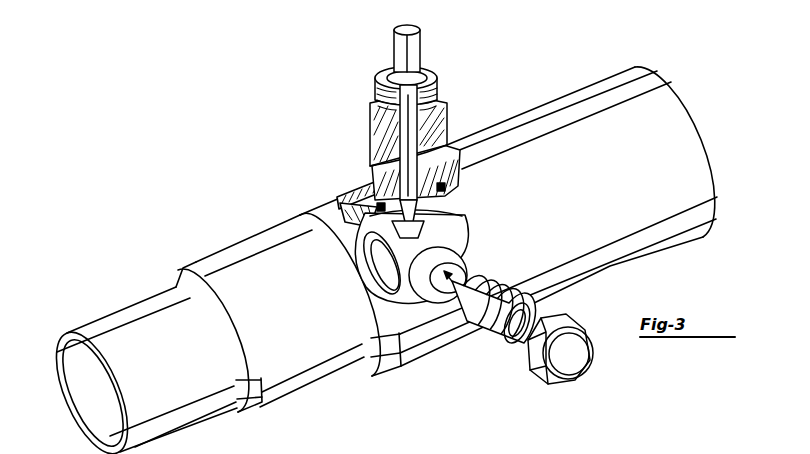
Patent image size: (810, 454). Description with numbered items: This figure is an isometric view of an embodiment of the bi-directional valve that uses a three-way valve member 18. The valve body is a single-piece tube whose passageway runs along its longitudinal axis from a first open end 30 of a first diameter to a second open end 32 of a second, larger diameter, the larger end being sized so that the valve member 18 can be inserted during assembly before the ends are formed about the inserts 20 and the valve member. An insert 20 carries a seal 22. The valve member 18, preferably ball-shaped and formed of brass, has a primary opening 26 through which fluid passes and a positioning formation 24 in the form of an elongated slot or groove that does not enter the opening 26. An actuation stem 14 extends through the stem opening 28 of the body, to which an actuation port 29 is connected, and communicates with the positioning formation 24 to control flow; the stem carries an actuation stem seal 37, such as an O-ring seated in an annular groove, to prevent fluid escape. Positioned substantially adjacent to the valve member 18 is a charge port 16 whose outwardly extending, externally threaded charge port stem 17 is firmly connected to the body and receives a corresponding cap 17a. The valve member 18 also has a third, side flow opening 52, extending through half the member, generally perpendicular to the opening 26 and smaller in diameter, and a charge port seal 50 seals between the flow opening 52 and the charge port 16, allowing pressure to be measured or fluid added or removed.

The actuation stem 14 is at (417, 26).
The charge port 16 is at (522, 360).
The charge port stem 17 is at (493, 335).
The cap 17a is at (573, 326).
The valve member 18 is at (370, 232).
The insert 20 is at (457, 182).
The seal 22 is at (448, 190).
The positioning formation 24 is at (447, 227).
The opening 26 is at (385, 268).
The stem opening 28 is at (440, 100).
The actuation port 29 is at (402, 83).
The first open end 30 is at (85, 401).
The second open end 32 is at (693, 117).
The actuation stem seal 37 is at (388, 123).
The charge port seal 50 is at (464, 271).
The flow opening 52 is at (470, 270).